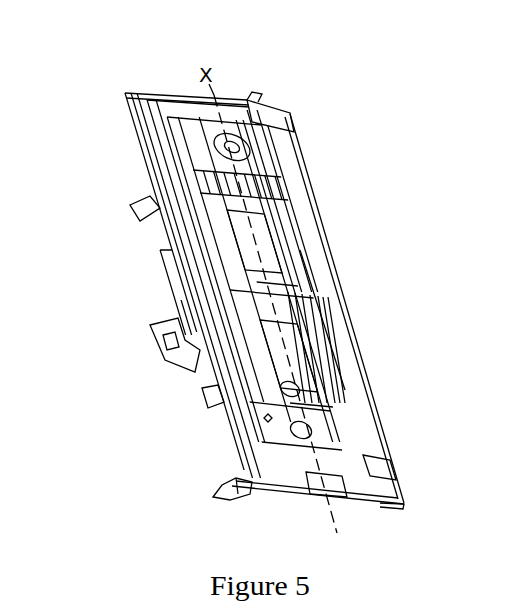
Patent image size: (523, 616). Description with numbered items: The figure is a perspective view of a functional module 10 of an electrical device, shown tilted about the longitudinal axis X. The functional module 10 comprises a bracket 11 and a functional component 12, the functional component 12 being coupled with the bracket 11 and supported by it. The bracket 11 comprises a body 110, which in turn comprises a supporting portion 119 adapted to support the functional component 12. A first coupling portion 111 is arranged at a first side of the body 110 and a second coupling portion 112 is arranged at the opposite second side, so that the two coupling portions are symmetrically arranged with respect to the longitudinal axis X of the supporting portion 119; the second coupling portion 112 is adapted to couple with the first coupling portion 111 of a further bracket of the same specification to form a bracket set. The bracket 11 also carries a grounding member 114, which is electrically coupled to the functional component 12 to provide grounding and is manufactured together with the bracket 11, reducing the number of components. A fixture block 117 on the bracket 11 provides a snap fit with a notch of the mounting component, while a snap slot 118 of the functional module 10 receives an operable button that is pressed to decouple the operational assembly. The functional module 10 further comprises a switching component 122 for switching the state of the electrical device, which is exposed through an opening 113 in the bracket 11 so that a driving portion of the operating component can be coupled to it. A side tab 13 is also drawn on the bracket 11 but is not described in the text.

The functional module 10 is at (183, 57).
The bracket 11 is at (318, 150).
The body 110 is at (296, 193).
The functional component 12 is at (233, 243).
The switching component 122 is at (268, 292).
The fixture block 117 is at (249, 97).
The side tab 13 is at (147, 199).
The grounding member 114 is at (183, 333).
The opening 113 is at (327, 357).
The supporting portion 119 is at (355, 398).
The first coupling portion 111 is at (366, 458).
The second coupling portion 112 is at (247, 450).
The snap slot 118 is at (339, 490).